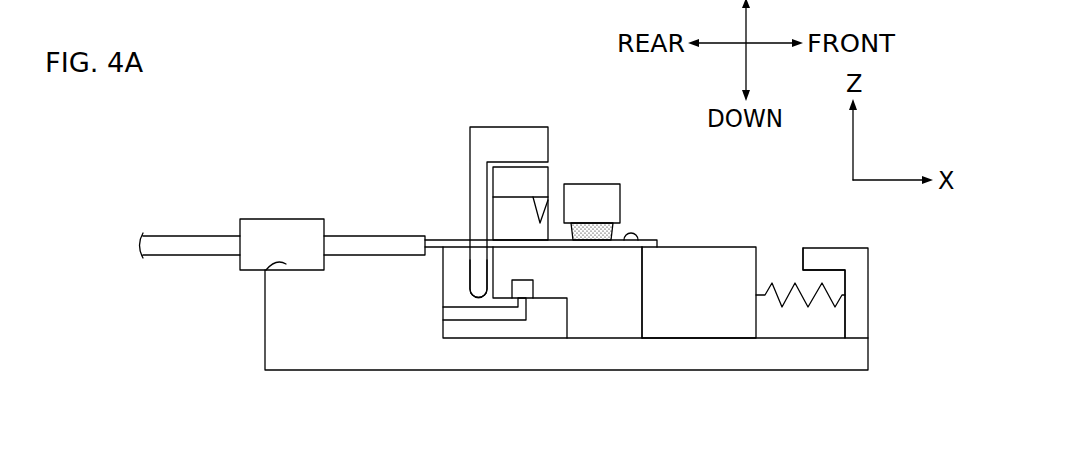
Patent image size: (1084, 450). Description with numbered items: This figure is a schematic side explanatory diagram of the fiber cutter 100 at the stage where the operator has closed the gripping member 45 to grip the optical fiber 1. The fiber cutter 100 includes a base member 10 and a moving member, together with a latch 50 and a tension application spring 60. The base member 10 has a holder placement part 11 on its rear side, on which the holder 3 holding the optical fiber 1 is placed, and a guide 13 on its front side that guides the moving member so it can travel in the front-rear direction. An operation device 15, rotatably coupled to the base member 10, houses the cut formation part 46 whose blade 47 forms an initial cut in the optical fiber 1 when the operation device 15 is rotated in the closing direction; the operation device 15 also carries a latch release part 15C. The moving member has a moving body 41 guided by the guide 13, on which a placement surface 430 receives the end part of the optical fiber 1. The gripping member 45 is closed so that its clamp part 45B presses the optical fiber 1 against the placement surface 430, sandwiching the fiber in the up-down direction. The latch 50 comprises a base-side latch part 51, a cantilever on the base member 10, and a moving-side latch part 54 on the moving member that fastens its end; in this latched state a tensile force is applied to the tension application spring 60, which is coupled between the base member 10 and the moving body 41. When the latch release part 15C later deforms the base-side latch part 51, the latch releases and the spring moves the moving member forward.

The fiber cutter 100 is at (280, 116).
The optical fiber 1 is at (196, 240).
The holder 3 is at (277, 232).
The base member 10 is at (278, 337).
The holder placement part 11 is at (292, 270).
The guide 13 is at (783, 336).
The operation device 15 is at (500, 142).
The latch release part 15C is at (473, 270).
The moving body 41 is at (710, 250).
The placement surface 430 is at (638, 247).
The gripping member 45 is at (592, 172).
The clamp part 45B is at (610, 233).
The cut formation part 46 is at (534, 183).
The blade 47 is at (545, 203).
The latch 50 is at (510, 365).
The base-side latch part 51 is at (523, 314).
The moving-side latch part 54 is at (528, 287).
The tension application spring 60 is at (785, 283).